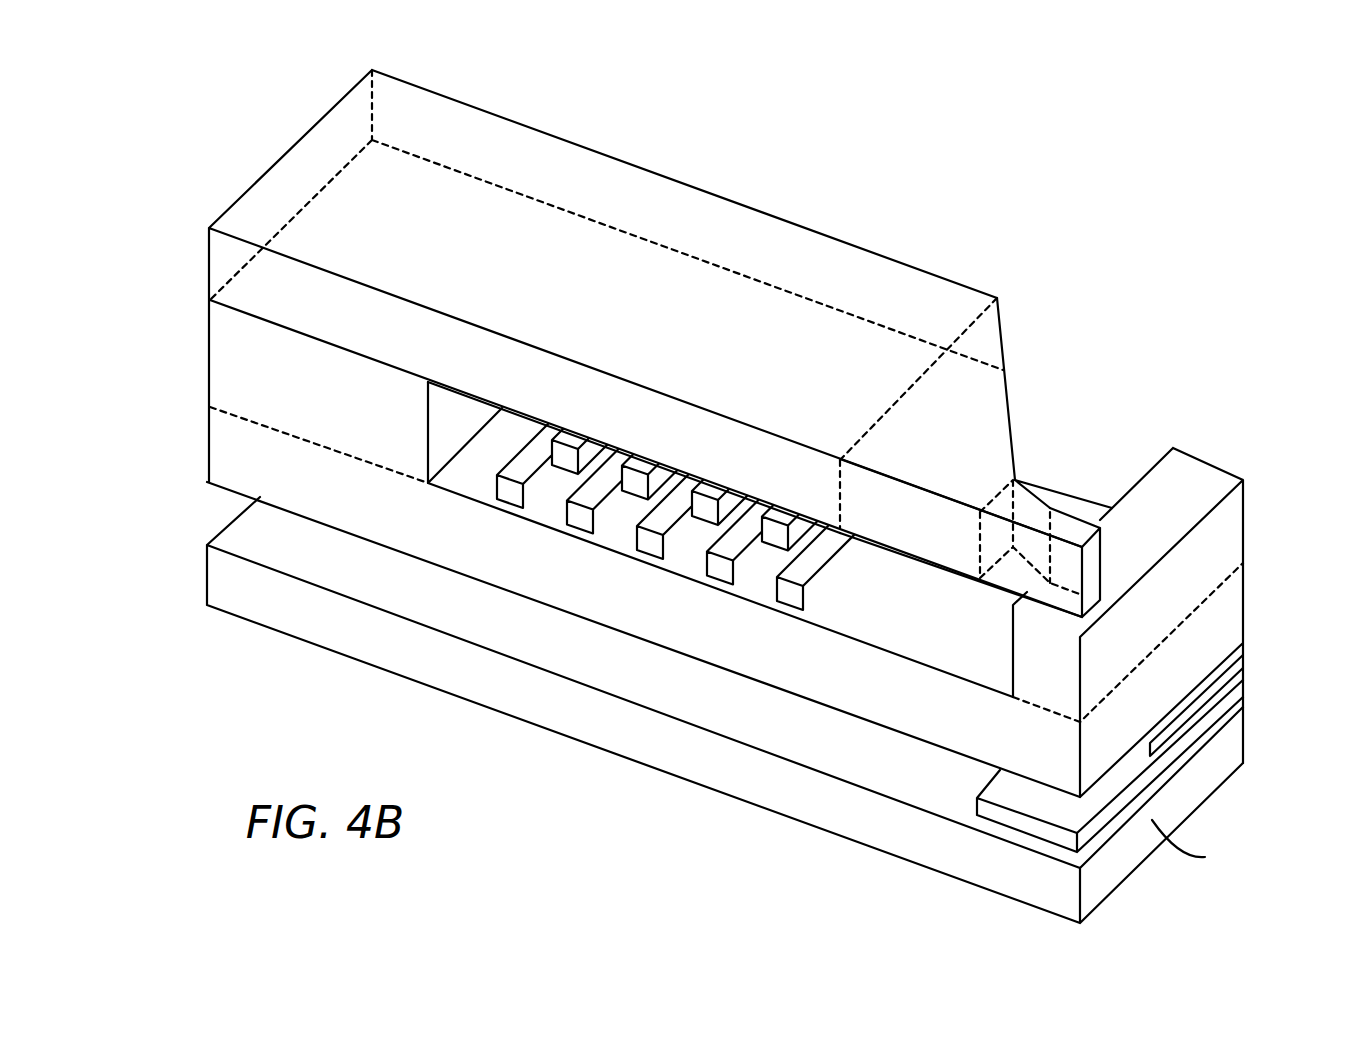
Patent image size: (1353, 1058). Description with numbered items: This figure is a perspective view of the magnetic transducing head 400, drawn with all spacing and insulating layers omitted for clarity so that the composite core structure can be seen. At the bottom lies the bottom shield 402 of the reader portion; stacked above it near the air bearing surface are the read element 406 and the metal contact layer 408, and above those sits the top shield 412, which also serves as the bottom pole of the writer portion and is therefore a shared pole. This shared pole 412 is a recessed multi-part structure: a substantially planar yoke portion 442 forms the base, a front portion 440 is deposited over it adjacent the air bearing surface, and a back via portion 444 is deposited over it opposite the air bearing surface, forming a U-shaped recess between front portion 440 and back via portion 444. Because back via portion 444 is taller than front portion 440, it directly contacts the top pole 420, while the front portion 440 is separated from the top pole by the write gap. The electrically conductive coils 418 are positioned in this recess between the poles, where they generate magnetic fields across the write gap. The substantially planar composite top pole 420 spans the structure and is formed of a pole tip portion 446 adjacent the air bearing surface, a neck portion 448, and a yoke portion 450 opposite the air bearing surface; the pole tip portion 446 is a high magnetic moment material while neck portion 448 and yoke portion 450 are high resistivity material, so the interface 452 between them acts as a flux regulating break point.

The transducing head 400 is at (1066, 223).
The bottom shield 402 is at (1015, 893).
The read element 406 is at (1238, 690).
The metal contact layer 408 is at (1243, 658).
The top shield / bottom pole (shared pole) 412 is at (1245, 540).
The conductive coils 418 is at (793, 595).
The top pole 420 is at (865, 247).
The front portion 440 is at (1028, 684).
The yoke portion (planar portion) 442 is at (1023, 762).
The back via portion 444 is at (300, 403).
The pole tip portion 446 is at (1030, 510).
The neck portion 448 is at (891, 535).
The yoke portion 450 is at (740, 472).
The interface 452 is at (1003, 487).